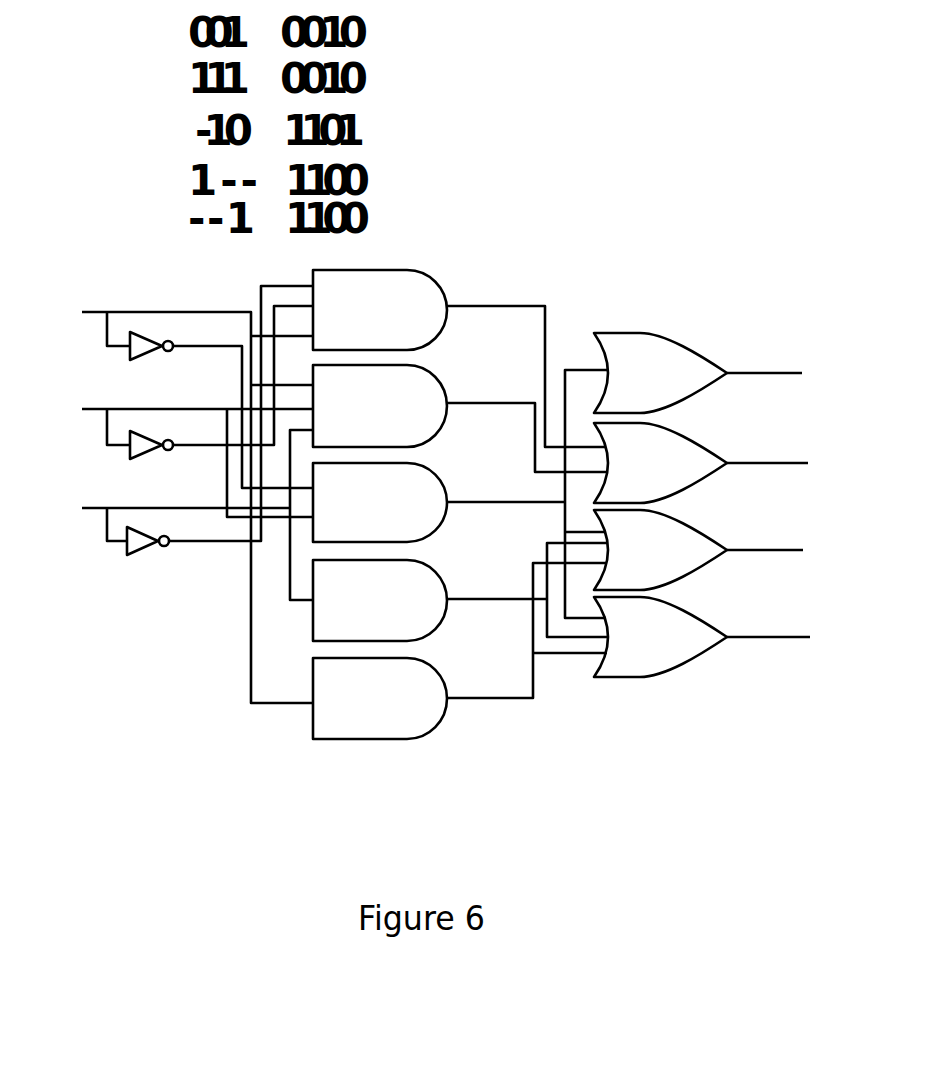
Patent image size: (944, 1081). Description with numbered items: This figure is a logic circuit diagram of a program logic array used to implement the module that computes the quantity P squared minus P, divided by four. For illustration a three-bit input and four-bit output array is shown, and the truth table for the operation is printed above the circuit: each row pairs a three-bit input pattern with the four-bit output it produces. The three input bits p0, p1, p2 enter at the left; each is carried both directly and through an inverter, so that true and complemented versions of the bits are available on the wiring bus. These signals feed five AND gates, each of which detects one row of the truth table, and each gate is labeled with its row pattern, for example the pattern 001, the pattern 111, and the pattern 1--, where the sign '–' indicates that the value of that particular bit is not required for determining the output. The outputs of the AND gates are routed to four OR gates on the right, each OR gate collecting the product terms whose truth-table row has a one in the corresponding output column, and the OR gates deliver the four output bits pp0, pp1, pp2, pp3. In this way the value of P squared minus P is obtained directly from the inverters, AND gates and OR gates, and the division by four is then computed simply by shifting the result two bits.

The input bit P0 p0 is at (176, 499).
The input bit P1 p1 is at (176, 411).
The input bit P2 p2 is at (176, 443).
The truth-table input pattern 001 is at (459, 358).
The truth-table input pattern 111 is at (460, 418).
The truth-table input pattern 1-- is at (460, 592).
The output bit PP0 pp0 is at (723, 373).
The output bit PP1 pp1 is at (726, 463).
The output bit PP2 pp2 is at (724, 550).
The output bit PP3 pp3 is at (727, 637).